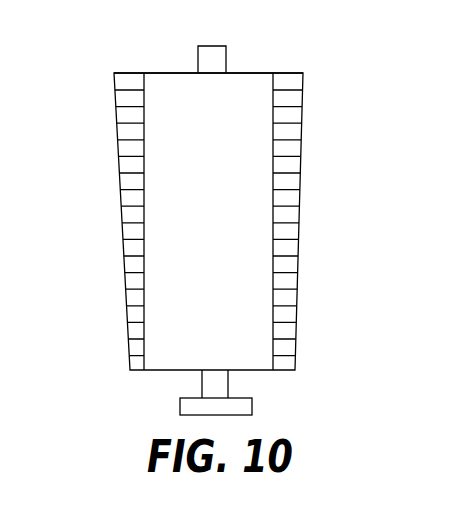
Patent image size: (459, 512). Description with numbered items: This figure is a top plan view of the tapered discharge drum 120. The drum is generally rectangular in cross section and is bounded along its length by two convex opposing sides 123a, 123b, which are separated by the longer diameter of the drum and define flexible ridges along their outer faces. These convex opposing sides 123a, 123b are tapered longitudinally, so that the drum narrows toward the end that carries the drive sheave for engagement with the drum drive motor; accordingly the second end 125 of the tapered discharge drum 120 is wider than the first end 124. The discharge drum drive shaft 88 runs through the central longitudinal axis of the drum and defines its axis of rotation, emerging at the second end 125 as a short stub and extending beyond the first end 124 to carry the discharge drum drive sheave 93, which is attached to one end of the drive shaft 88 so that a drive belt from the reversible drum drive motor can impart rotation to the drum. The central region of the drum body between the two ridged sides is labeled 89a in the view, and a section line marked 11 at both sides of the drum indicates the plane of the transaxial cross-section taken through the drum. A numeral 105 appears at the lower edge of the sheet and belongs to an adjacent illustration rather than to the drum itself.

The tapered discharge drum 120 is at (291, 33).
The discharge drum drive shaft 88 is at (226, 52).
The second end 125 is at (174, 73).
The section line 11- 11 is at (114, 98).
The convex opposing side 123a is at (118, 150).
The convex opposing side 123b is at (302, 146).
The central chamber 89a is at (225, 226).
The first end 124 is at (266, 370).
The discharge drum drive sheave 93 is at (180, 406).
The adjacent figure element 105 is at (131, 508).